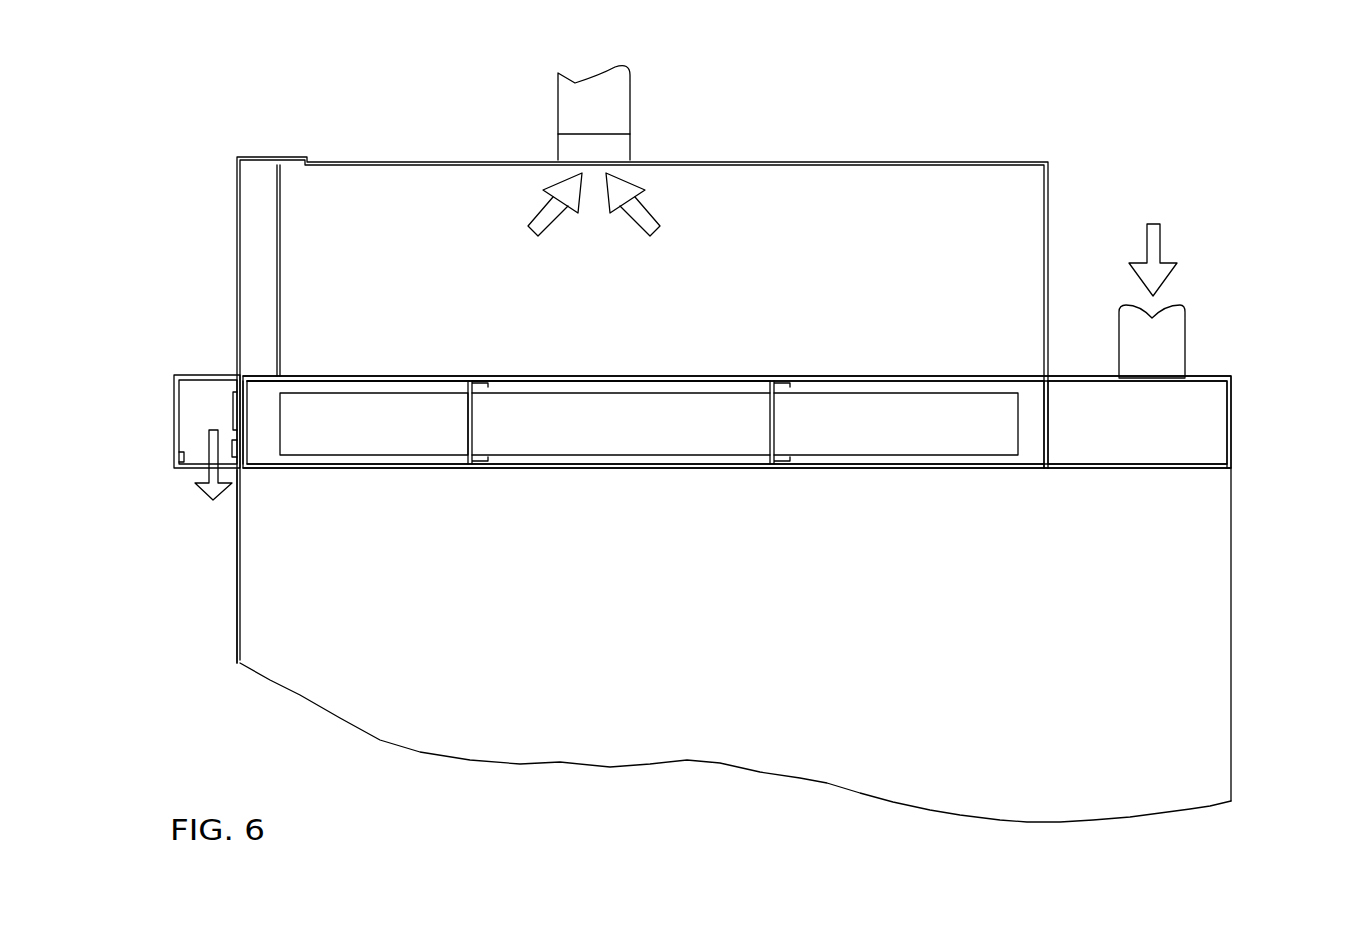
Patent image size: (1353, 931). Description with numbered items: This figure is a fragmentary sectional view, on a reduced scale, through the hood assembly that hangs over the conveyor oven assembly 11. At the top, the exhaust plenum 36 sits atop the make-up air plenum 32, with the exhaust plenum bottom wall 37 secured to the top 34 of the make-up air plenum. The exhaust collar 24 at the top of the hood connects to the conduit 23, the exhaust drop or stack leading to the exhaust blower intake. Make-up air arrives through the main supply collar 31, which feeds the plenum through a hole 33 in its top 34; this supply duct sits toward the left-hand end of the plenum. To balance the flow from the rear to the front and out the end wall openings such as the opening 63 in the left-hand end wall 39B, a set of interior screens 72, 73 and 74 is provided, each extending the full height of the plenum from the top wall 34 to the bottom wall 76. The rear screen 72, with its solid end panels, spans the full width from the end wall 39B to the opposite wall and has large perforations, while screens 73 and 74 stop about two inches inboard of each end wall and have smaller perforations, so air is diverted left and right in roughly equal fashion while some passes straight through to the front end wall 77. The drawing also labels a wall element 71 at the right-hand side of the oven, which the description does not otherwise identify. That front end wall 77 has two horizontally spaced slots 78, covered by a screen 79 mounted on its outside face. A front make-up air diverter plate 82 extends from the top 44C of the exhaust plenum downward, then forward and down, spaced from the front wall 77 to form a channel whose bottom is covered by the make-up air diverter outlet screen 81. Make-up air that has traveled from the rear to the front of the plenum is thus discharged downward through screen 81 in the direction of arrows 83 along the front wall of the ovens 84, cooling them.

The conveyor oven assembly 11 is at (668, 562).
The conduit 23 is at (608, 103).
The exhaust collar 24 is at (605, 147).
The main supply collar 31 is at (1171, 352).
The make-up air plenum 32 is at (658, 434).
The hole 33 is at (1155, 381).
The top of make-up air plenum 34 is at (1208, 377).
The exhaust plenum 36 is at (608, 259).
The exhaust plenum bottom wall 37 is at (712, 377).
The make-up air plenum end wall 39B is at (313, 383).
The top of exhaust plenum 44C is at (842, 161).
The opening 63 is at (378, 427).
The right side wall 71 is at (1231, 757).
The make-up air plenum rear screen 72 is at (1048, 427).
The make-up air interior screen 73 is at (772, 425).
The make-up air interior screen 74 is at (470, 428).
The bottom wall of make-up air plenum 76 is at (933, 468).
The front end wall 77 is at (236, 448).
The slots 78 is at (258, 413).
The make-up air plenum front screen 79 is at (236, 412).
The make-up air diverter outlet screen 81 is at (183, 470).
The front make-up air diverter plate 82 is at (185, 375).
The arrows 83 is at (213, 486).
The front wall of the ovens 84 is at (240, 620).